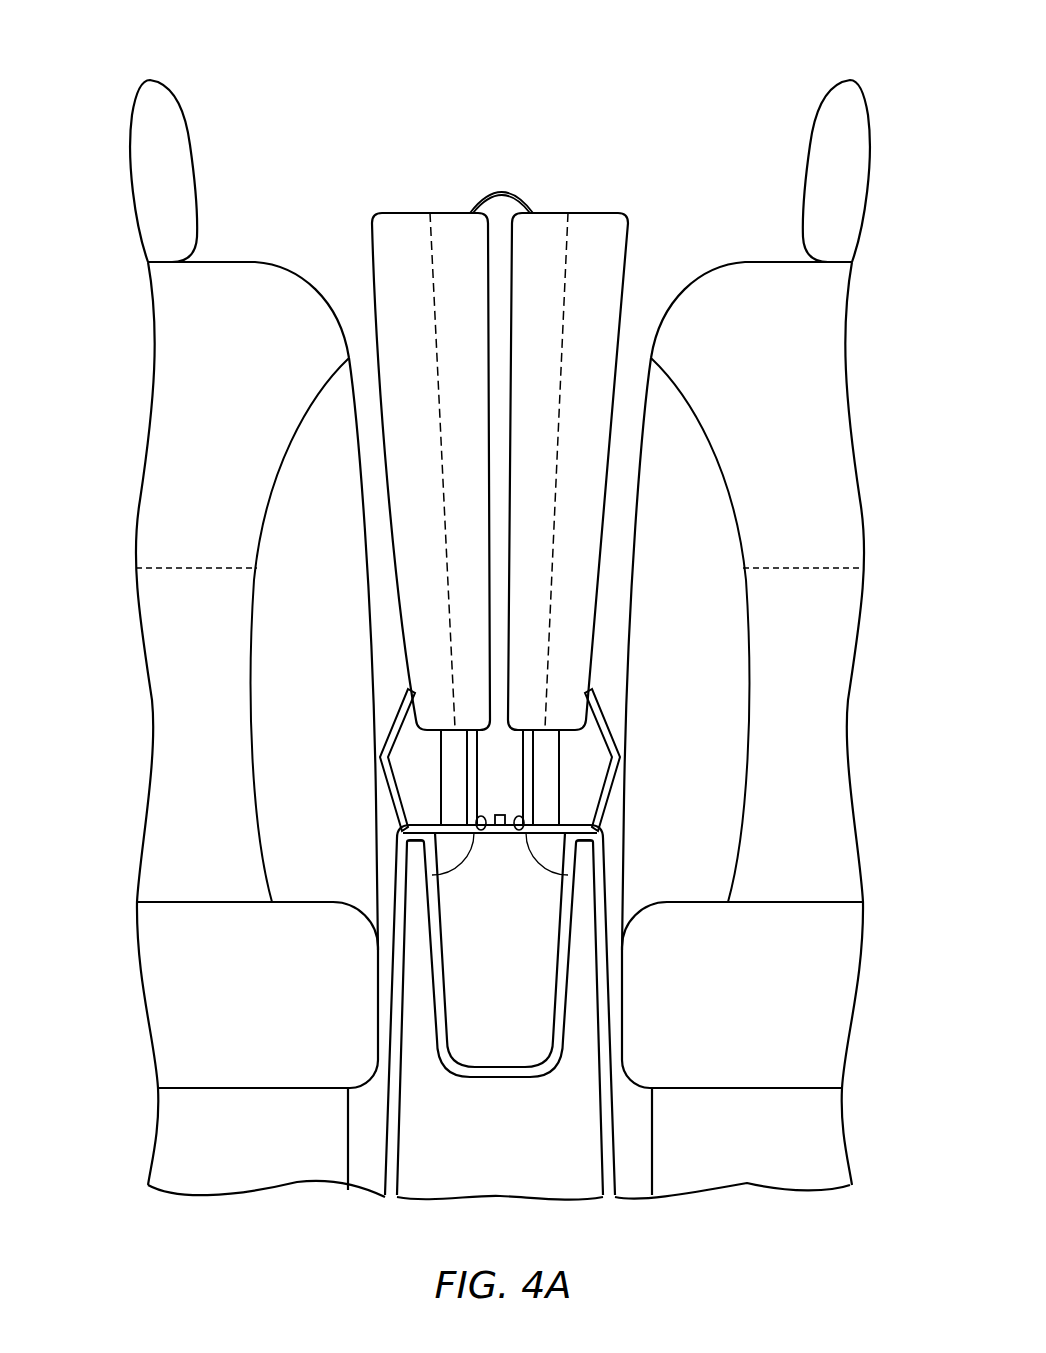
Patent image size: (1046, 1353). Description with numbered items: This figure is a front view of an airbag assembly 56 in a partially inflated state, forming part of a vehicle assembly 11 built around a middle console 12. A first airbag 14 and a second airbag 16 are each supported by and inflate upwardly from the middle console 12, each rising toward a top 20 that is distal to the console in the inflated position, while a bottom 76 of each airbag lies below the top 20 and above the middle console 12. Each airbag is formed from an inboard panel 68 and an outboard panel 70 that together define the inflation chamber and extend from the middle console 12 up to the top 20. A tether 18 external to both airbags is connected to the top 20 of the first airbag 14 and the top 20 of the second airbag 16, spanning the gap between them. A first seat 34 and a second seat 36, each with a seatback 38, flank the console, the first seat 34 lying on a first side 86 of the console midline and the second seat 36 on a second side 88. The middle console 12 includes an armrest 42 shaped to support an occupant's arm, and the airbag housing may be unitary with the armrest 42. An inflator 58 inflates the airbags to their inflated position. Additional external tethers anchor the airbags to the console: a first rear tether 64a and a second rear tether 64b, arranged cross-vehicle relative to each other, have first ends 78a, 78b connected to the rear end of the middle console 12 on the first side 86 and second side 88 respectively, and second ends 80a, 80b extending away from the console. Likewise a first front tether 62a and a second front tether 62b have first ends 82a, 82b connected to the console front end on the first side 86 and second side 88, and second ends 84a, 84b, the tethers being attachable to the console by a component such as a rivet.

The assembly 11 is at (334, 62).
The middle console 12 is at (612, 662).
The first airbag 14 is at (628, 262).
The second airbag 16 is at (372, 262).
The tether 18 is at (500, 192).
The top 20 is at (428, 210).
The first seat 34 is at (767, 261).
The second seat 36 is at (233, 261).
The seatback 38 is at (212, 363).
The armrest 42 is at (606, 730).
The airbag assembly 56 is at (630, 122).
The inflator 58 is at (501, 813).
The first front tether 62a is at (548, 815).
The second front tether 62b is at (453, 808).
The first rear tether 64a is at (520, 834).
The second rear tether 64b is at (480, 834).
The inboard panel 68 is at (462, 246).
The outboard panel 70 is at (398, 254).
The bottom 76 is at (455, 728).
The first end of first rear tether 78a is at (568, 875).
The first end of second rear tether 78b is at (432, 875).
The second end of first rear tether 80a is at (527, 727).
The second end of second rear tether 80b is at (473, 727).
The first end of first front tether 82a is at (582, 848).
The first end of second front tether 82b is at (418, 848).
The second end of first front tether 84a is at (553, 747).
The second end of second front tether 84b is at (447, 747).
The first side 86 is at (598, 709).
The second side 88 is at (405, 691).